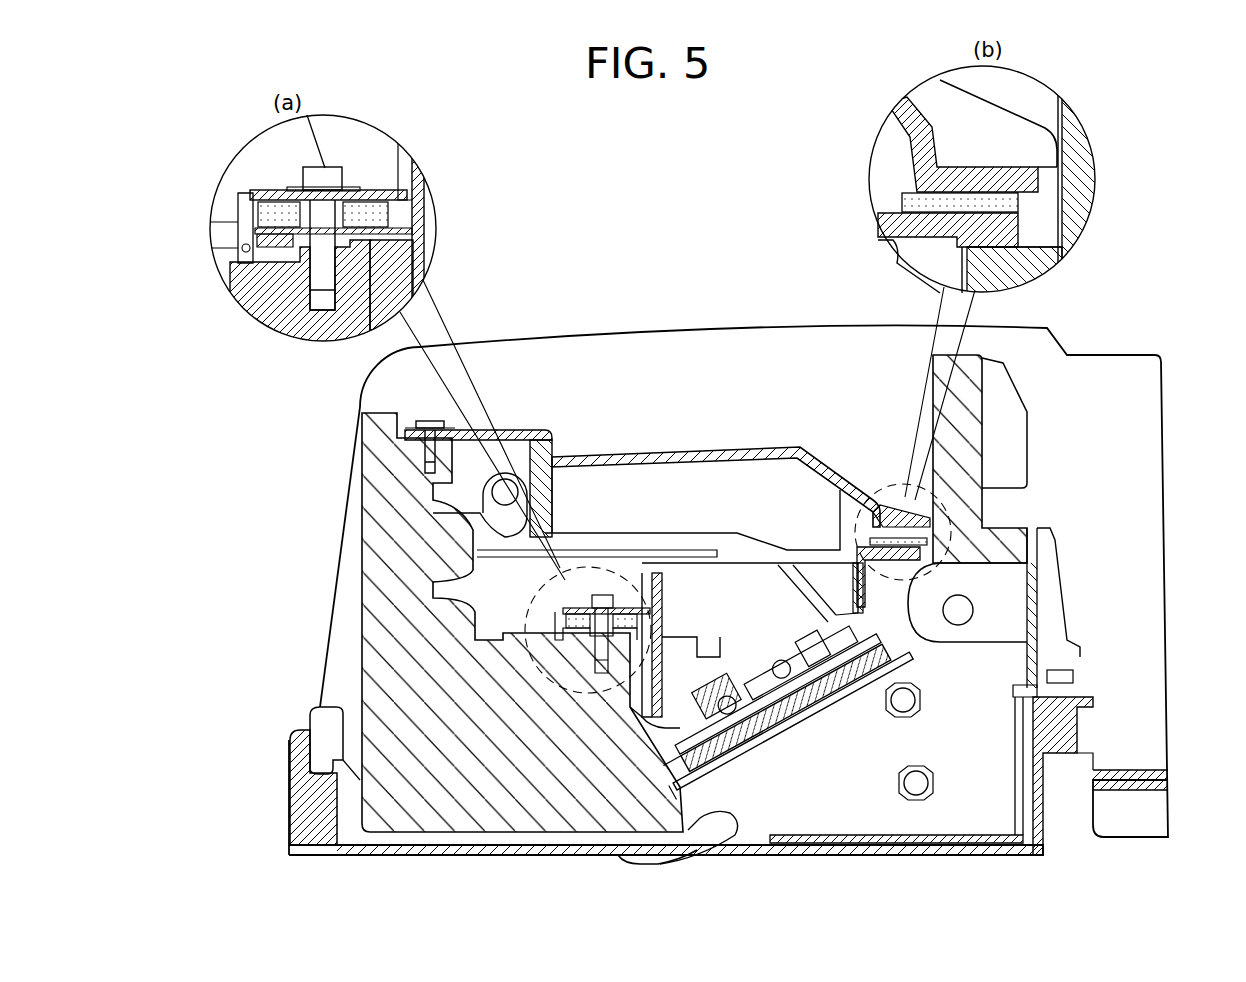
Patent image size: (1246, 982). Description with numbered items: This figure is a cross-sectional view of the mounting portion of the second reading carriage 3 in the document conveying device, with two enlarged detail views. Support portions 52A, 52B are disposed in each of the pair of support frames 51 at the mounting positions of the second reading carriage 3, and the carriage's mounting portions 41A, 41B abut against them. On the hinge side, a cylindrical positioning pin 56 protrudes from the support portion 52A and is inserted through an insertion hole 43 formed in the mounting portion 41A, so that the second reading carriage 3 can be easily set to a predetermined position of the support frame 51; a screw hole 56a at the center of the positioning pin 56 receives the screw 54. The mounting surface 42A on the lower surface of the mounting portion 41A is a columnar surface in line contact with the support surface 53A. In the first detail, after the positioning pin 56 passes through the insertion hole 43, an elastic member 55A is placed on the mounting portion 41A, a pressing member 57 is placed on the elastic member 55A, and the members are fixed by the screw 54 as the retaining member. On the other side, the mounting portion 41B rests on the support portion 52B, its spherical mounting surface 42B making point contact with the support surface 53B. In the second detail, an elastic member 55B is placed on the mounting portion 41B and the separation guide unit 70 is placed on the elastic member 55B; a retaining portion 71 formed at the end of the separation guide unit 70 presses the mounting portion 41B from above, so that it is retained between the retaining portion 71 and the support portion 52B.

The second reading carriage 3 is at (895, 627).
The mounting portion 41A is at (373, 233).
The mounting portion 41B is at (1013, 227).
The mounting surface 42A is at (273, 257).
The mounting surface 42B is at (960, 250).
The insertion hole 43 is at (333, 265).
The support frame 51 is at (373, 635).
The support portion 52A is at (625, 650).
The support portion 52B is at (923, 575).
The support surface 53A is at (247, 243).
The support surface 53B is at (1023, 243).
The screw 54 is at (330, 170).
The elastic member 55A is at (383, 212).
The elastic member 55B is at (903, 202).
The positioning pin 56 is at (297, 230).
The screw hole 56a is at (310, 303).
The pressing member 57 is at (377, 190).
The separation guide unit 70 is at (718, 435).
The retaining portion 71 is at (910, 488).